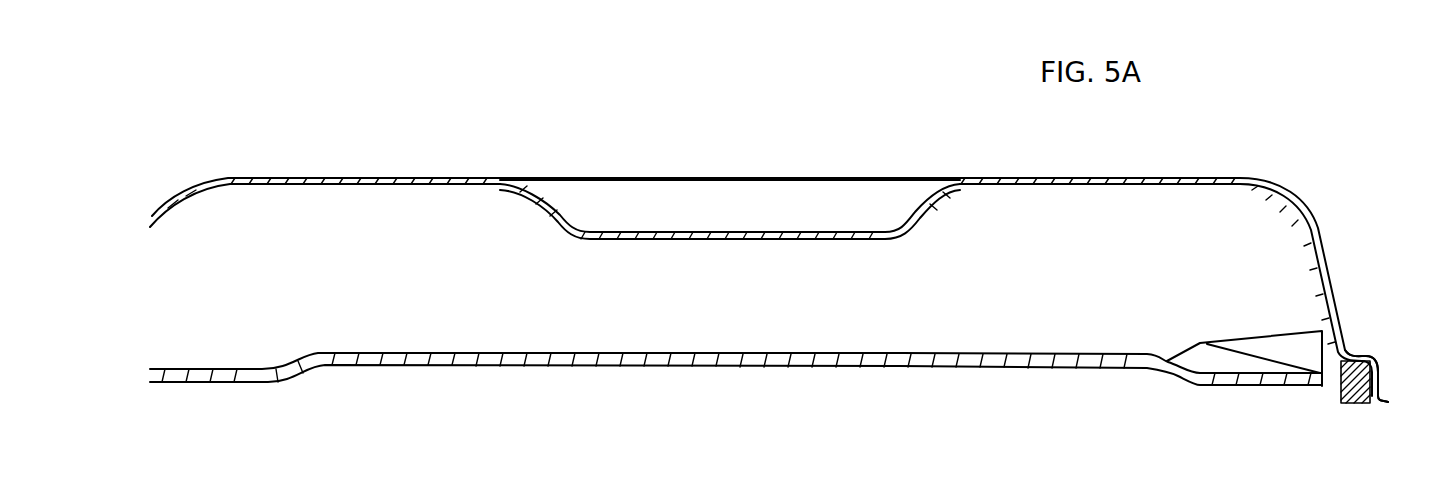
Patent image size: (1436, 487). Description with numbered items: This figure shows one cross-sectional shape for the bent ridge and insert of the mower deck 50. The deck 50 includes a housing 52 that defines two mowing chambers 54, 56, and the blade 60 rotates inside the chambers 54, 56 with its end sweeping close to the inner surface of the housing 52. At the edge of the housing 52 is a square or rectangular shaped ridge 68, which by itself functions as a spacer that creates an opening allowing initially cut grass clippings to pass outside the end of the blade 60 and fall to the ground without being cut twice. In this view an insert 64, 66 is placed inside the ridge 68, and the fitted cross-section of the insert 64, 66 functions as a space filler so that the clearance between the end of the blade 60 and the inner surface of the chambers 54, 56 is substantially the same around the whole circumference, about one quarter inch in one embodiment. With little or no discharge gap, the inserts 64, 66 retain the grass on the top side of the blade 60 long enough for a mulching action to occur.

The mower deck 50 is at (1306, 128).
The housing 52 is at (1302, 212).
The mowing chamber 54 is at (1112, 270).
The mowing chamber 56 is at (1163, 270).
The blade 60 is at (977, 369).
The insert 64 is at (1355, 405).
The insert 66 is at (1355, 382).
The ridge 68 is at (1358, 359).